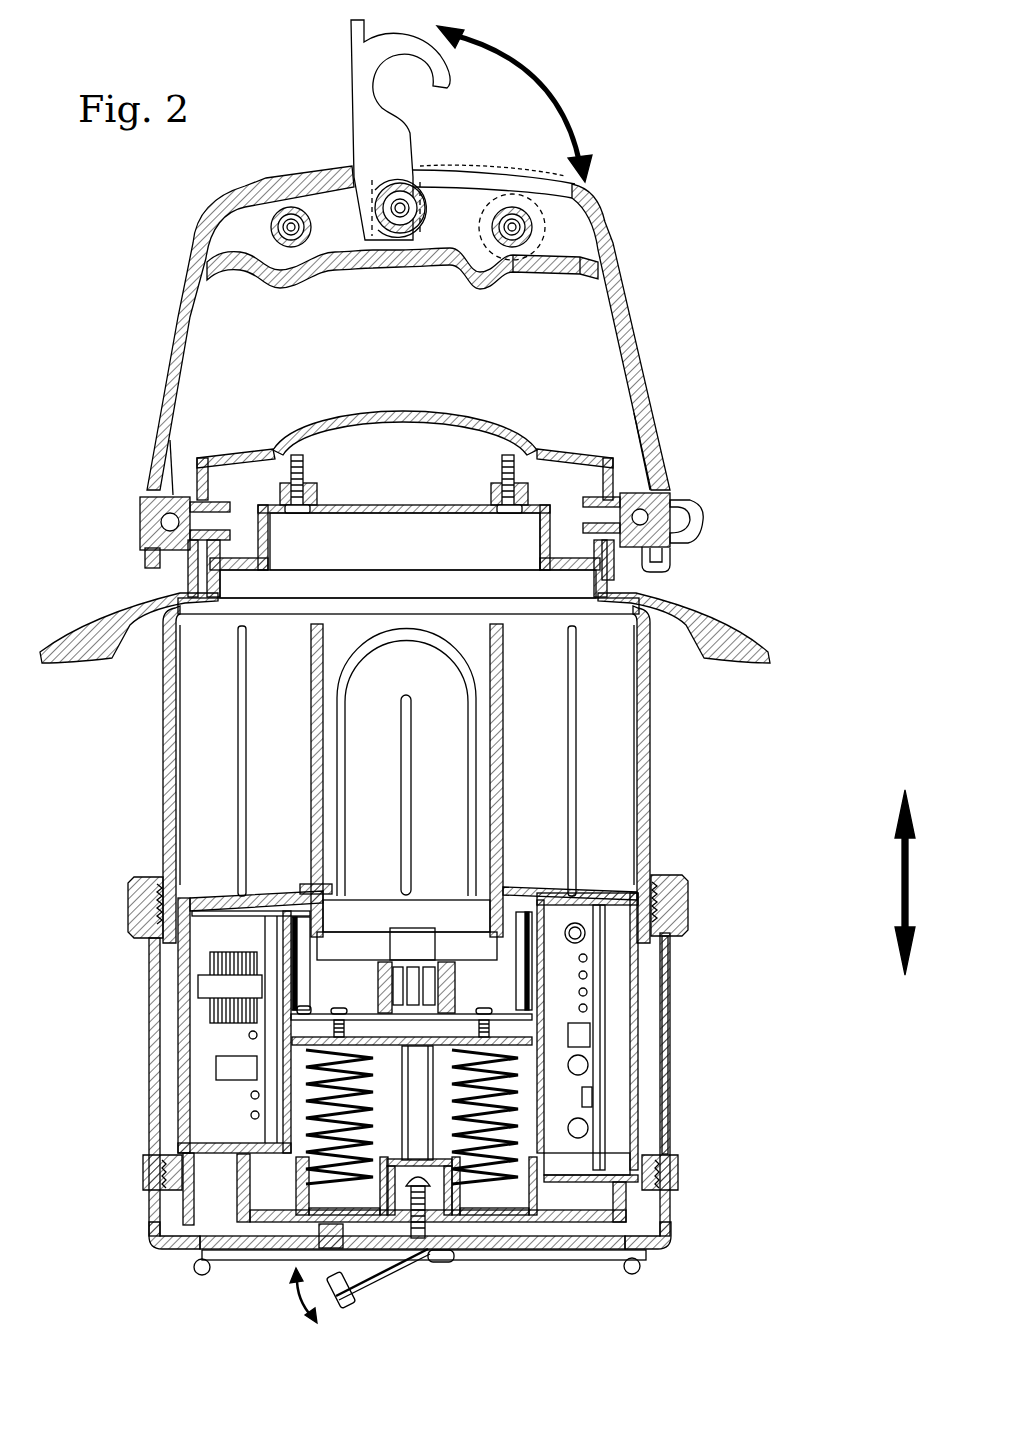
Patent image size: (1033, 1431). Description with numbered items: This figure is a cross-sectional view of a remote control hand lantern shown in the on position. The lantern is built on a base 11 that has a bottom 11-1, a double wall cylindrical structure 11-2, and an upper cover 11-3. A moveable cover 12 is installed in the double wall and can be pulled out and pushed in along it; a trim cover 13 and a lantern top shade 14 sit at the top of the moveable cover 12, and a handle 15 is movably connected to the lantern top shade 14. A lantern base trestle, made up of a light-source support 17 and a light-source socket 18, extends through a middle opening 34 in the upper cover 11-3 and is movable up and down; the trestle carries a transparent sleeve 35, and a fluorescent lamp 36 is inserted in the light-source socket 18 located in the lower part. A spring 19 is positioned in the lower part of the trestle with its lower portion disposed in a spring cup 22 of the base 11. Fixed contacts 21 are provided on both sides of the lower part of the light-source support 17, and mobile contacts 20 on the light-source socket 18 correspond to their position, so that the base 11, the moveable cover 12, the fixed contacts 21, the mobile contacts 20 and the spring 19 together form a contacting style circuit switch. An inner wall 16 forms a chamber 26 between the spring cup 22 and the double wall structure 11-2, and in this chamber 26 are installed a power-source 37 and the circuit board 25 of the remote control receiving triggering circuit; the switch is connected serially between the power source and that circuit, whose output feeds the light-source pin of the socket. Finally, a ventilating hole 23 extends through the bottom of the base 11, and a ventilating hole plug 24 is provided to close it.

The base 11 is at (670, 1000).
The bottom 11-1 is at (558, 1246).
The double wall cylindrical structure 11-2 is at (670, 953).
The upper cover 11-3 is at (540, 893).
The moveable cover 12 is at (645, 790).
The trim cover 13 is at (727, 638).
The lantern top shade 14 is at (492, 421).
The handle 15 is at (607, 268).
The inner wall 16 is at (676, 1188).
The light-source support 17 is at (311, 814).
The light-source socket 18 is at (377, 998).
The spring 19 is at (308, 1131).
The mobile contacts 20 is at (527, 1021).
The fixed contacts 21 is at (535, 988).
The spring cup 22 is at (305, 1190).
The ventilating hole 23 is at (336, 1226).
The ventilating hole plug 24 is at (336, 1299).
The circuit board 25 is at (597, 1100).
The chamber 26 is at (690, 890).
The middle opening 34 is at (311, 888).
The transparent sleeve 35 is at (503, 780).
The fluorescent lamp 36 is at (364, 779).
The power-source 37 is at (300, 1045).